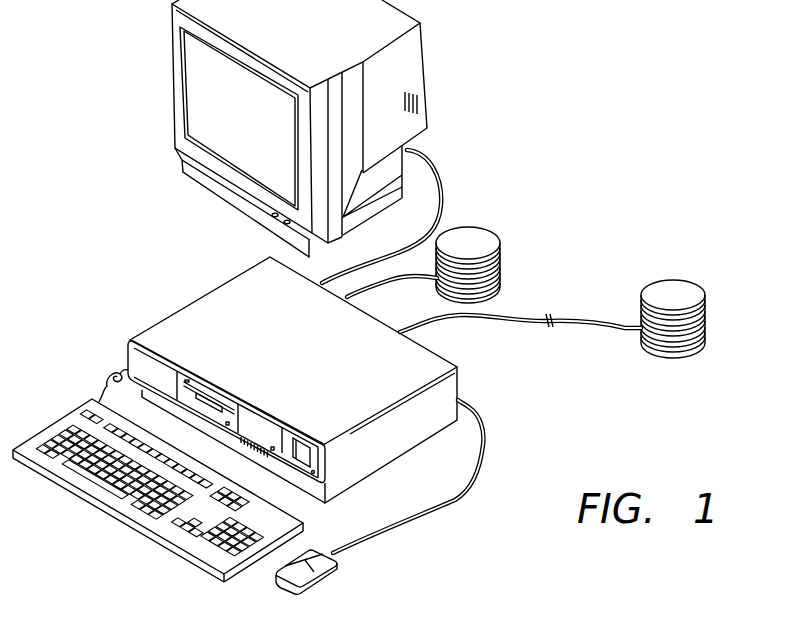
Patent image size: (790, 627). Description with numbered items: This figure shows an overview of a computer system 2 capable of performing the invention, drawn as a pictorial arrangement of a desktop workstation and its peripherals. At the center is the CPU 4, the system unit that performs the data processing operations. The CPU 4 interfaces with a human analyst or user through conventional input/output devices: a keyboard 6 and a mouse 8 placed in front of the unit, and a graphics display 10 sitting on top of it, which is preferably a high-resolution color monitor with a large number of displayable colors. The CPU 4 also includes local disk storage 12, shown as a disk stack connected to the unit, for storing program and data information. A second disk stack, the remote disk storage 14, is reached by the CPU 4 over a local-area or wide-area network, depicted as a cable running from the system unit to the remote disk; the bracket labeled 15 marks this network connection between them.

The computer system 2 is at (66, 90).
The CPU 4 is at (186, 318).
The keyboard 6 is at (60, 428).
The mouse 8 is at (333, 573).
The graphics display 10 is at (185, 158).
The local disk storage 12 is at (475, 232).
The remote disk storage 14 is at (680, 288).
The communication link 15 is at (632, 334).